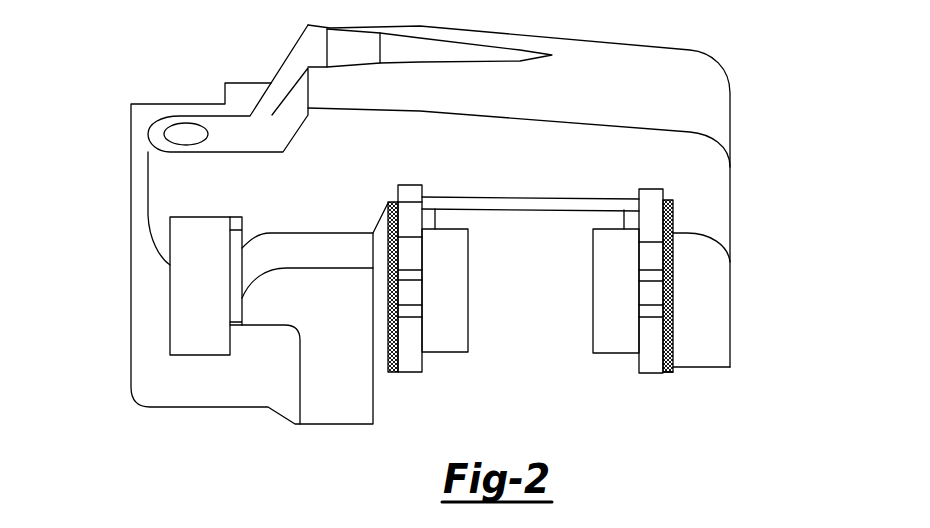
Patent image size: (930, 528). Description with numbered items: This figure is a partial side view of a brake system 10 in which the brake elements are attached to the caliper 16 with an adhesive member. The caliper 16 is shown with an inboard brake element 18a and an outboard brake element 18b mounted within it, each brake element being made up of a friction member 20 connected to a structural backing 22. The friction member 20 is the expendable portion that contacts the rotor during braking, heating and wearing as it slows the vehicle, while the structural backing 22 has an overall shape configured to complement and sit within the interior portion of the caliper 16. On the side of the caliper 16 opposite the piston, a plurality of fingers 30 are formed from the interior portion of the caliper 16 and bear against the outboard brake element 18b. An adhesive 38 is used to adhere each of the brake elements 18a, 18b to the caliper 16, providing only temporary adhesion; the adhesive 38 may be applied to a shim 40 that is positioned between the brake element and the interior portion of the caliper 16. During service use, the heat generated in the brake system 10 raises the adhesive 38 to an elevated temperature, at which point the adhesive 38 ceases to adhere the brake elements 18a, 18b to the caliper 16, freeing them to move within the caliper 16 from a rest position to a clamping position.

The brake system 10 is at (93, 241).
The caliper 16 is at (718, 197).
The inboard brake element 18a is at (413, 362).
The outboard brake element 18b is at (652, 361).
The friction member 20 is at (455, 290).
The structural backing 22 is at (407, 252).
The fingers 30 is at (712, 348).
The adhesive 38 is at (387, 328).
The shim 40 is at (672, 372).